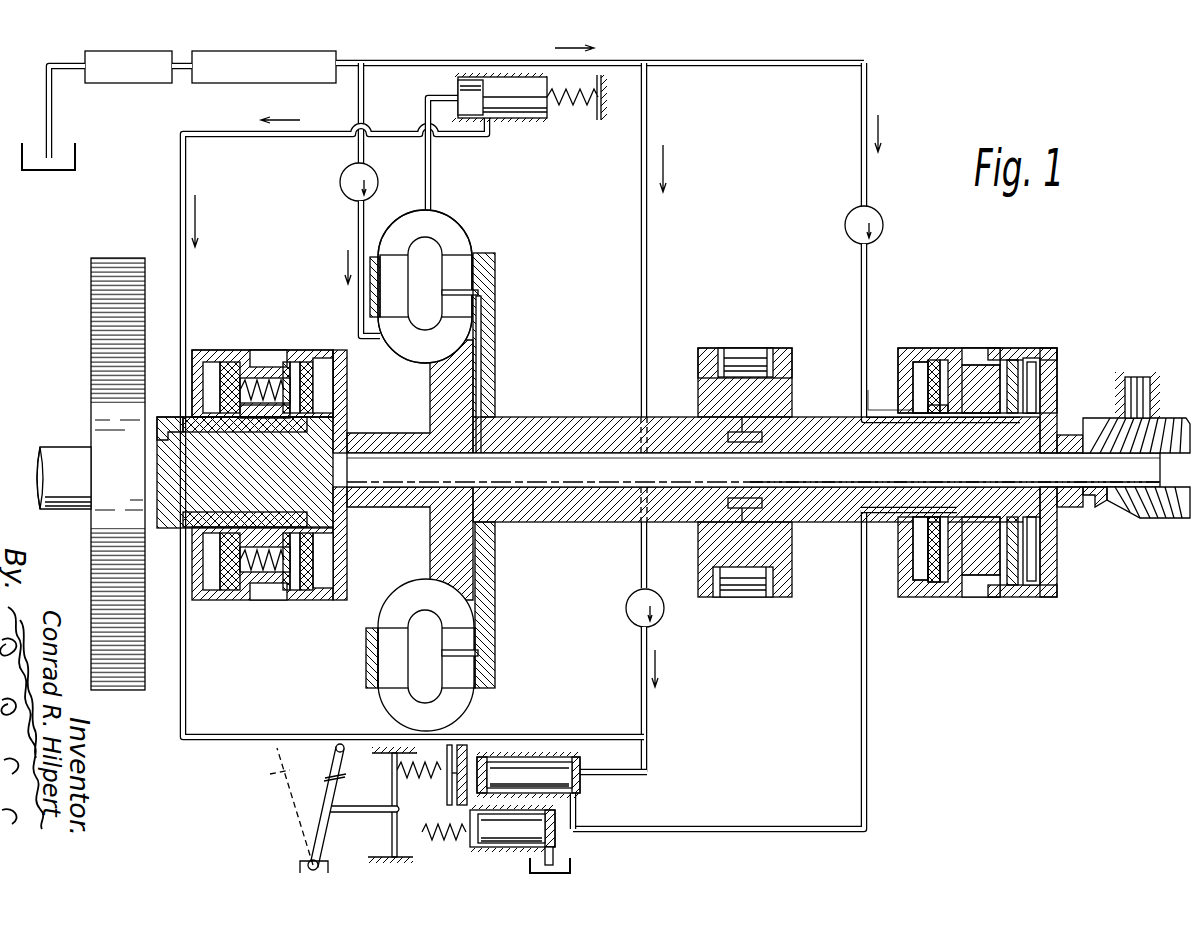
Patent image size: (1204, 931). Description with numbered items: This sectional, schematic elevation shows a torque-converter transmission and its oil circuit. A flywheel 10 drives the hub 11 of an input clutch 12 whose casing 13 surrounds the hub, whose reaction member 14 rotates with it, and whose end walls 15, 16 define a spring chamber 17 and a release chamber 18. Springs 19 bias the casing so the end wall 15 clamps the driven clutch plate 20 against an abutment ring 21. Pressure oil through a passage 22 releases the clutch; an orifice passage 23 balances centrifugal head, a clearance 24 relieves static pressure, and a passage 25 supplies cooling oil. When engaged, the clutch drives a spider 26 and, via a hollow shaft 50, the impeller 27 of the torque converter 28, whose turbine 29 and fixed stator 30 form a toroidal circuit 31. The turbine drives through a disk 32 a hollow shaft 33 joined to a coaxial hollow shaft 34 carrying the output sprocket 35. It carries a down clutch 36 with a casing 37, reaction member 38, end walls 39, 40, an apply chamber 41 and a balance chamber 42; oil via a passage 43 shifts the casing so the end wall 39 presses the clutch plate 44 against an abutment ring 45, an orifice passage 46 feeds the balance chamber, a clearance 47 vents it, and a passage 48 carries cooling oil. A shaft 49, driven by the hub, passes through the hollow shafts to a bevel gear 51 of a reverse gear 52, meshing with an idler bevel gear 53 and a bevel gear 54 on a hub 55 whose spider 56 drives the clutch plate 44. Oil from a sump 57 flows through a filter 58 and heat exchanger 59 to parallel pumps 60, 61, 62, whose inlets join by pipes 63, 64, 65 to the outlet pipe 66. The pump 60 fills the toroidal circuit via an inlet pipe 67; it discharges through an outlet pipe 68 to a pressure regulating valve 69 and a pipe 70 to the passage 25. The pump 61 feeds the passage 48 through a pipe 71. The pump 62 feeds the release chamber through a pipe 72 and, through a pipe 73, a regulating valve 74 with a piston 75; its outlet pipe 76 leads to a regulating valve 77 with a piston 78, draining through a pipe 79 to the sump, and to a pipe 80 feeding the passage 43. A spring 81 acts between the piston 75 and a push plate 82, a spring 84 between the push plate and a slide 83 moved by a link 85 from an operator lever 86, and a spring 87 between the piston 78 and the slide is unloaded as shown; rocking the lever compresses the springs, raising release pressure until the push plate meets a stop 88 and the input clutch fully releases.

The flywheel 10 is at (91, 270).
The hub 11 is at (245, 472).
The input clutch 12 is at (254, 292).
The annular casing 13 is at (228, 362).
The annular reaction member 14 is at (226, 362).
The annular end wall 15 is at (298, 362).
The annular end wall 16 is at (202, 350).
The spring chamber 17 is at (232, 600).
The release chamber 18 is at (212, 590).
The springs 19 is at (266, 590).
The driven clutch plate 20 is at (290, 592).
The abutment ring 21 is at (312, 592).
The passage 22 is at (170, 530).
The orifice passage 23 is at (218, 393).
The clearance 24 is at (268, 420).
The passage 25 is at (222, 437).
The spider 26 is at (345, 371).
The impeller 27 is at (465, 300).
The hydraulic torque converter 28 is at (470, 212).
The turbine 29 is at (462, 257).
The fixed stator 30 is at (392, 255).
The toroidal circuit 31 is at (455, 238).
The disk 32 is at (496, 360).
The hollow shaft 33 is at (566, 417).
The hollow shaft 34 is at (810, 417).
The sprocket 35 is at (698, 352).
The down clutch 36 is at (954, 324).
The annular casing 37 is at (906, 348).
The annular reaction member 38 is at (938, 362).
The annular end wall 39 is at (976, 365).
The annular end wall 40 is at (914, 370).
The apply chamber 41 is at (940, 582).
The balance chamber 42 is at (920, 580).
The passage 43 is at (870, 505).
The clutch plate 44 is at (1012, 597).
The abutment ring 45 is at (1032, 585).
The orifice passage 46 is at (940, 416).
The clearance 47 is at (913, 398).
The passage 48 is at (955, 468).
The shaft 49 is at (522, 478).
The hollow shaft 50 is at (384, 432).
The bevel gear 51 is at (1172, 518).
The reverse gear 52 is at (1142, 364).
The idler bevel gear 53 is at (1172, 418).
The bevel gear 54 is at (1096, 505).
The hub 55 is at (1068, 435).
The spider 56 is at (1048, 348).
The sump 57 is at (45, 172).
The filter 58 is at (126, 84).
The heat exchanger 59 is at (240, 84).
The pump 60 is at (340, 182).
The pump 61 is at (845, 222).
The pump 62 is at (665, 617).
The pipe 63 is at (357, 99).
The pipe 64 is at (858, 160).
The pipe 65 is at (650, 232).
The outlet pipe 66 is at (700, 67).
The inlet pipe 67 is at (357, 224).
The outlet pipe 68 is at (432, 172).
The pressure regulating valve 69 is at (516, 120).
The pipe 70 is at (384, 132).
The pipe 71 is at (860, 284).
The pipe 72 is at (649, 700).
The pipe 73 is at (650, 767).
The pressure regulating valve 74 is at (538, 757).
The piston 75 is at (529, 775).
The pipe 76 is at (577, 805).
The pressure regulating valve 77 is at (474, 847).
The piston 78 is at (511, 828).
The pipe 79 is at (557, 855).
The pipe 80 is at (776, 826).
The spring 81 is at (470, 757).
The push plate 82 is at (450, 790).
The slide 83 is at (390, 780).
The spring 84 is at (436, 772).
The link 85 is at (378, 812).
The operator controlled lever 86 is at (334, 756).
The spring 87 is at (455, 838).
The stop 88 is at (455, 748).